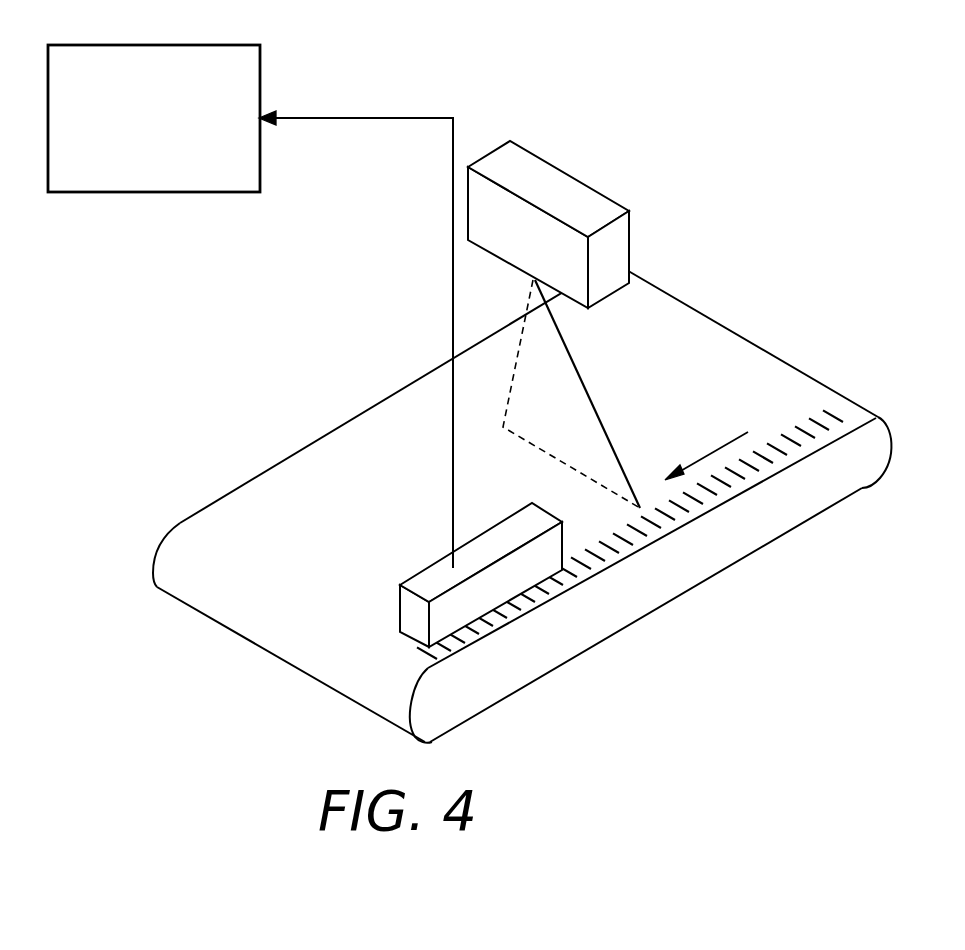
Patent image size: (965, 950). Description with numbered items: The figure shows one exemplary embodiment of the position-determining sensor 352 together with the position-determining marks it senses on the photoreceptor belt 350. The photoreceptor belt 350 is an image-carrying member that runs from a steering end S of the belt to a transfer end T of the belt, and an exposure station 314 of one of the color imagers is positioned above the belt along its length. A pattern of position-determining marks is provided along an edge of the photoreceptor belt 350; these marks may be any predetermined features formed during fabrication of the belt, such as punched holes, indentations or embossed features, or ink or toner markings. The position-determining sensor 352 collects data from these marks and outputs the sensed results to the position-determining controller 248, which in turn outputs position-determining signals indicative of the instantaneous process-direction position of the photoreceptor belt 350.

The position-determining controller 248 is at (262, 71).
The exposure station 314 is at (625, 237).
The photoreceptor belt 350 is at (735, 348).
The position-determining sensor 352 is at (430, 565).
The steering end S is at (875, 443).
The transfer end T is at (439, 707).